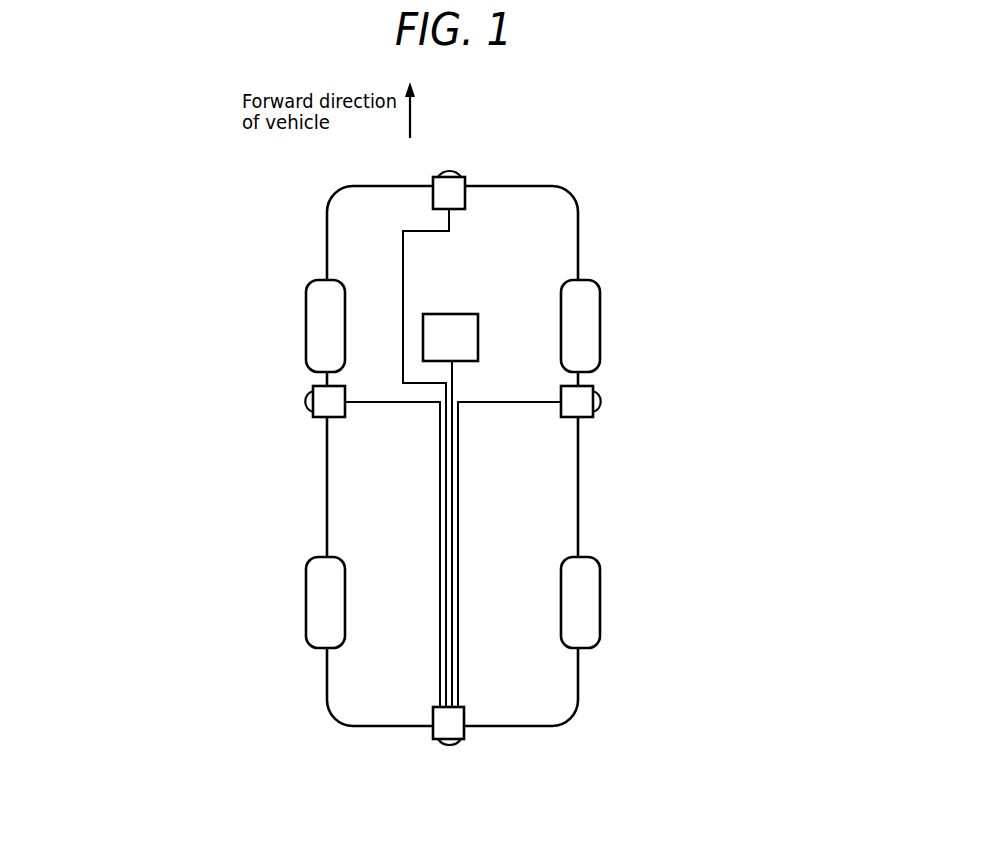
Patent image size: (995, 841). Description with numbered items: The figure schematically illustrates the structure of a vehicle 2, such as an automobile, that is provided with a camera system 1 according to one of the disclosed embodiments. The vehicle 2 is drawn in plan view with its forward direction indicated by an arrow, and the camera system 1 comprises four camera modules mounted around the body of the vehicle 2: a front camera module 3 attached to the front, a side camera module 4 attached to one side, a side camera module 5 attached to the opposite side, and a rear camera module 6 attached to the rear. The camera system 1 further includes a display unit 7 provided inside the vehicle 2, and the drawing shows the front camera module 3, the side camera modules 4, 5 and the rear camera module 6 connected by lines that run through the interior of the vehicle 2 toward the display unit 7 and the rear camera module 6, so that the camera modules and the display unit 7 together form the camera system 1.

The camera system 1 is at (526, 252).
The vehicle 2 is at (579, 489).
The front camera module 3 is at (447, 169).
The side camera module 4 is at (599, 393).
The side camera module 5 is at (306, 401).
The rear camera module 6 is at (447, 743).
The display unit 7 is at (432, 318).